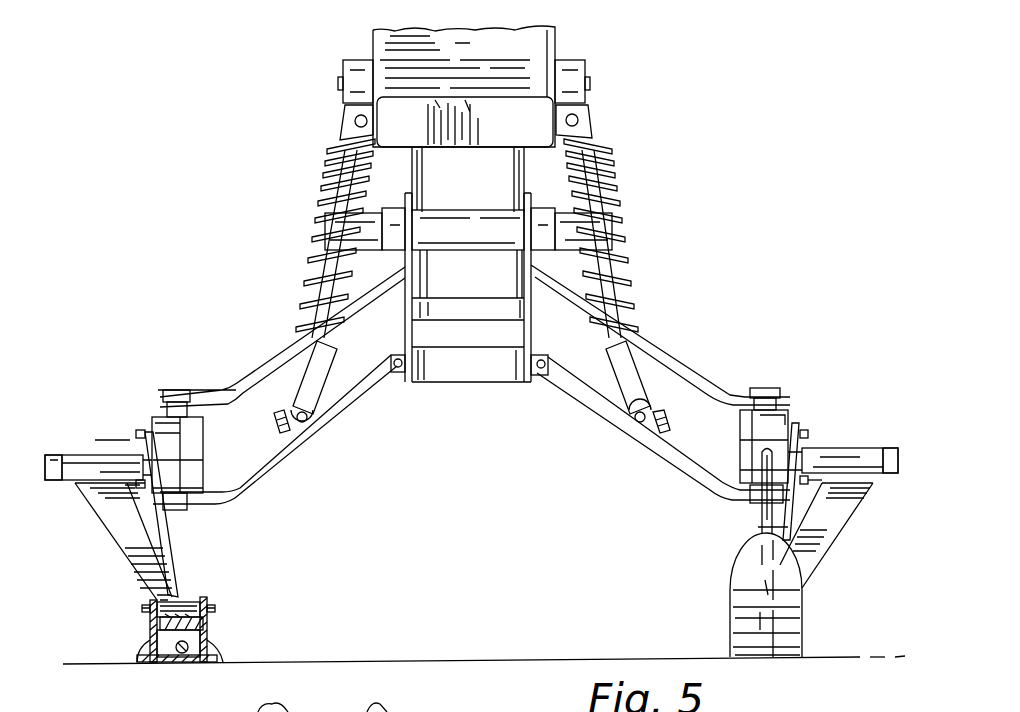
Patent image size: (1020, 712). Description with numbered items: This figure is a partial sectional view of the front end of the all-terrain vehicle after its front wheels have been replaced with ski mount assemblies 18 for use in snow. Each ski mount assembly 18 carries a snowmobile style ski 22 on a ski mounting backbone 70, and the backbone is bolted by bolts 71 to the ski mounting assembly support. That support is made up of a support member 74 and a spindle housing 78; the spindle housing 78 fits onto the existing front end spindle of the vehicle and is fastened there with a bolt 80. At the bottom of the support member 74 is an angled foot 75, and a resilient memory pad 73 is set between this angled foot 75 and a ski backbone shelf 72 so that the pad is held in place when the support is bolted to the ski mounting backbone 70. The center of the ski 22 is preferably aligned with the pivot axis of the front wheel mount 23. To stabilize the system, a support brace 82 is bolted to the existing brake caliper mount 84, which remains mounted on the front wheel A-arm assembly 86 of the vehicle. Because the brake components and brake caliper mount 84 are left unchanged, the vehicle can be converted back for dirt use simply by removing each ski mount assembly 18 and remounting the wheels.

The ski mount assembly 18 is at (212, 590).
The ski 22 is at (217, 658).
The front wheel mount 23 is at (207, 457).
The ski mounting backbone 70 is at (150, 643).
The bolts 71 is at (208, 607).
The ski backbone shelf 72 is at (197, 630).
The memory pad 73 is at (160, 623).
The support member 74 is at (112, 533).
The angled foot 75 is at (160, 593).
The spindle housing 78 is at (102, 455).
The bolt 80 is at (36, 436).
The support brace 82 is at (164, 532).
The brake caliper mount 84 is at (138, 437).
The front wheel A-arm assembly 86 is at (306, 452).